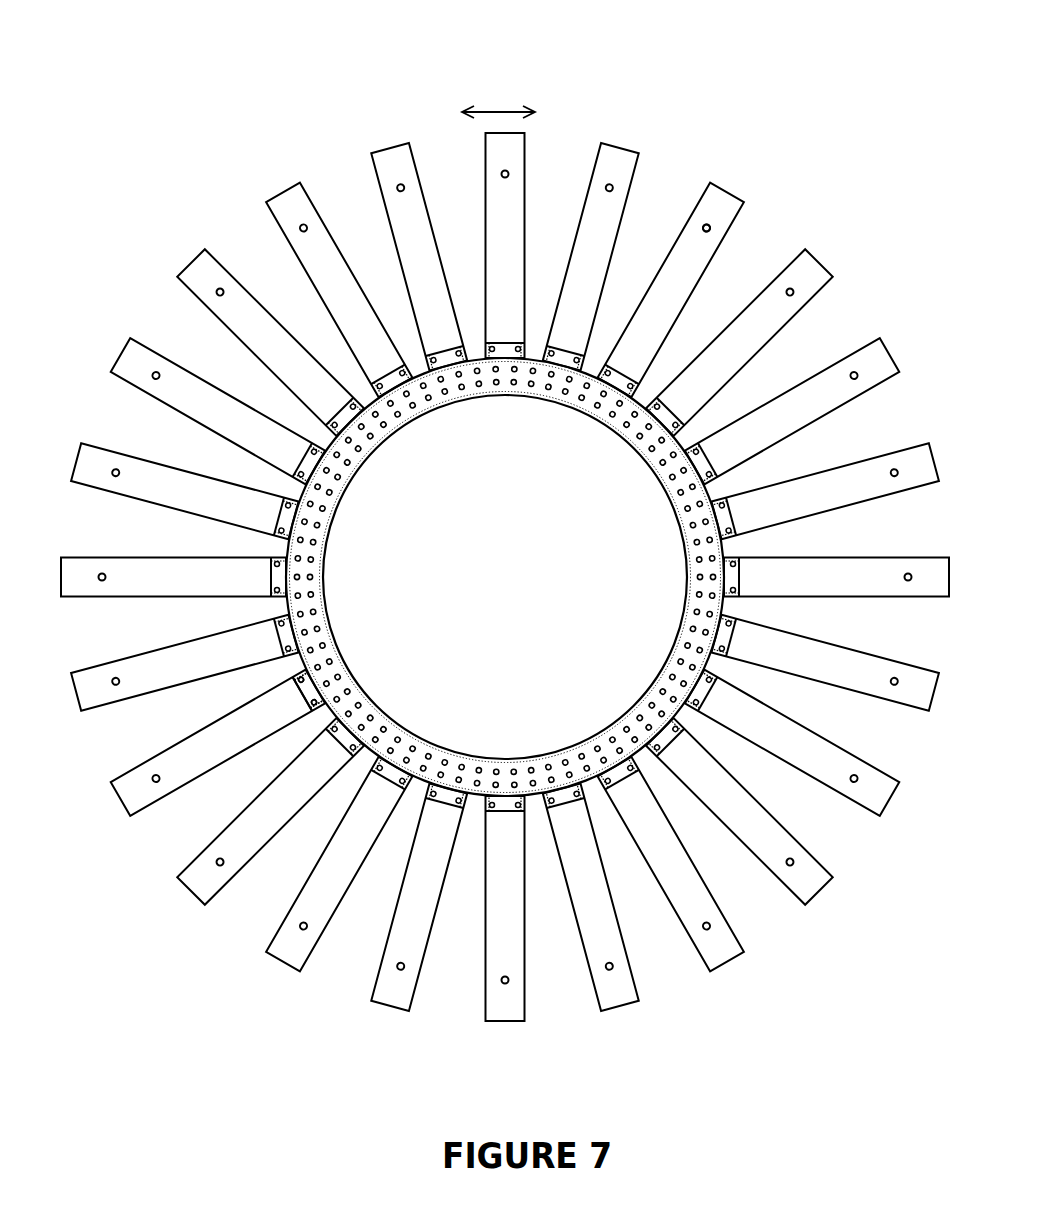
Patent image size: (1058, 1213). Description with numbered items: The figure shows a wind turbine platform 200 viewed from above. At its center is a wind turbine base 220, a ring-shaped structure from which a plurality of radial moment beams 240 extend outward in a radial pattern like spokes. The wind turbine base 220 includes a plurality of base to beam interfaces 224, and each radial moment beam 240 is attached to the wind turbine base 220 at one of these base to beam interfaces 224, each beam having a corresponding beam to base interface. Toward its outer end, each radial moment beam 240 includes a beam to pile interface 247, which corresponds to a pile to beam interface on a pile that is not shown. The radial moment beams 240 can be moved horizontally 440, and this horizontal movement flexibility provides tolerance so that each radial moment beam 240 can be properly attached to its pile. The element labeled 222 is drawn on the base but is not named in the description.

The wind turbine platform 200 is at (152, 101).
The wind turbine base 220 is at (638, 698).
The hub flange with holes 222 is at (627, 425).
The base to beam interface 224 is at (307, 697).
The radial moment beam 240 is at (525, 157).
The beam to pile interface 247 is at (710, 226).
The horizontal movement 440 is at (500, 110).